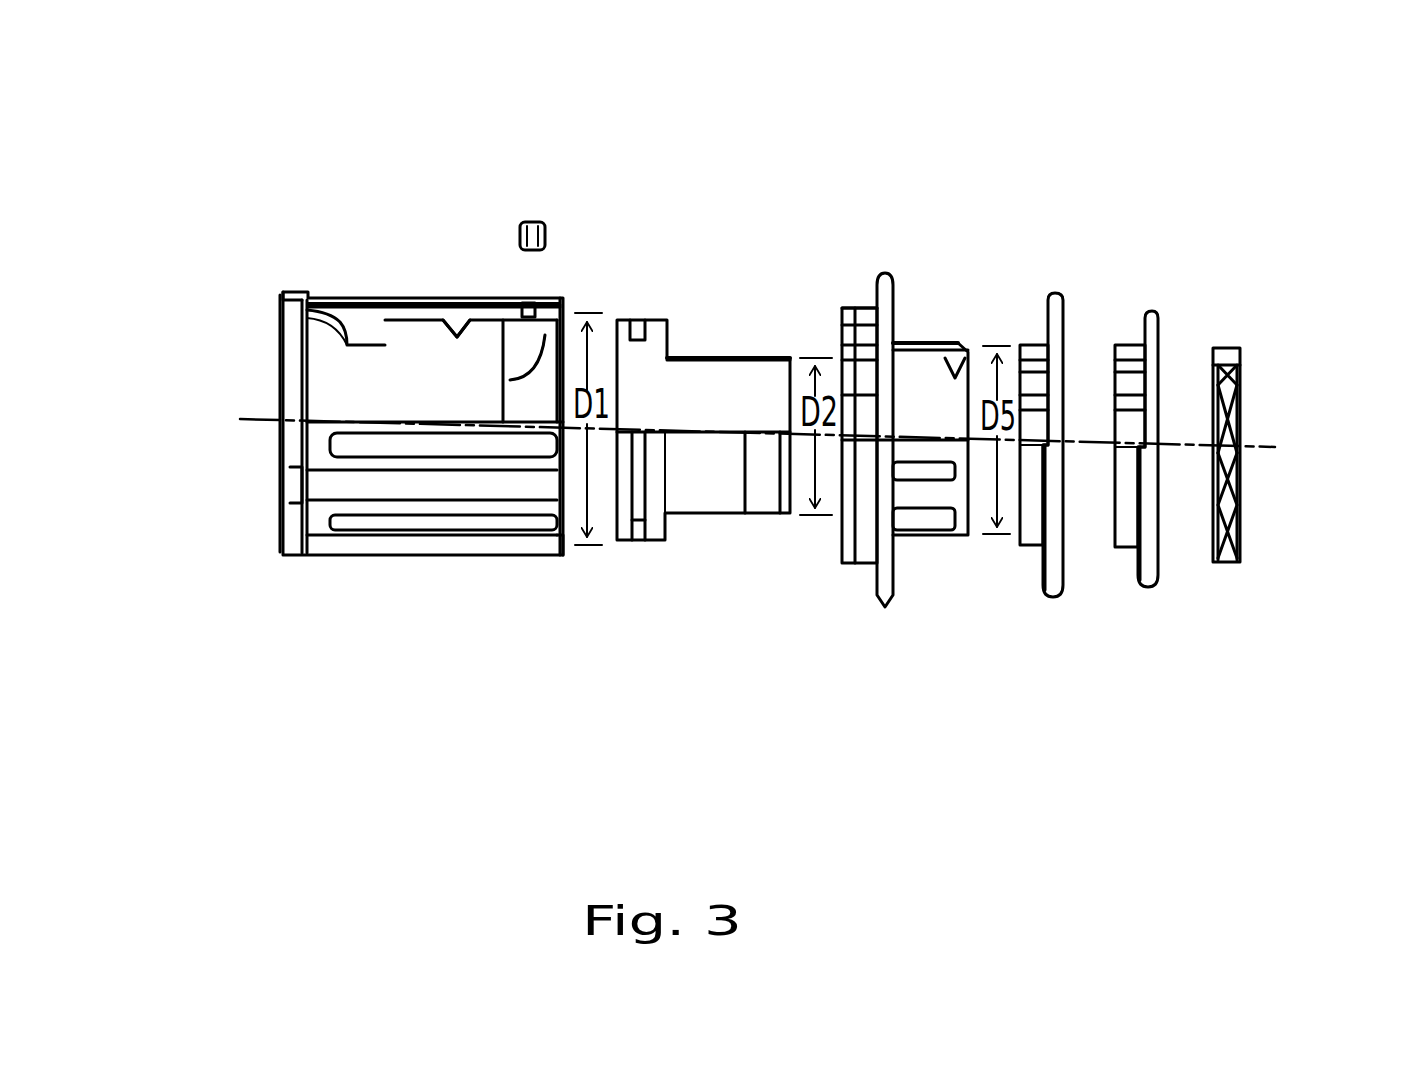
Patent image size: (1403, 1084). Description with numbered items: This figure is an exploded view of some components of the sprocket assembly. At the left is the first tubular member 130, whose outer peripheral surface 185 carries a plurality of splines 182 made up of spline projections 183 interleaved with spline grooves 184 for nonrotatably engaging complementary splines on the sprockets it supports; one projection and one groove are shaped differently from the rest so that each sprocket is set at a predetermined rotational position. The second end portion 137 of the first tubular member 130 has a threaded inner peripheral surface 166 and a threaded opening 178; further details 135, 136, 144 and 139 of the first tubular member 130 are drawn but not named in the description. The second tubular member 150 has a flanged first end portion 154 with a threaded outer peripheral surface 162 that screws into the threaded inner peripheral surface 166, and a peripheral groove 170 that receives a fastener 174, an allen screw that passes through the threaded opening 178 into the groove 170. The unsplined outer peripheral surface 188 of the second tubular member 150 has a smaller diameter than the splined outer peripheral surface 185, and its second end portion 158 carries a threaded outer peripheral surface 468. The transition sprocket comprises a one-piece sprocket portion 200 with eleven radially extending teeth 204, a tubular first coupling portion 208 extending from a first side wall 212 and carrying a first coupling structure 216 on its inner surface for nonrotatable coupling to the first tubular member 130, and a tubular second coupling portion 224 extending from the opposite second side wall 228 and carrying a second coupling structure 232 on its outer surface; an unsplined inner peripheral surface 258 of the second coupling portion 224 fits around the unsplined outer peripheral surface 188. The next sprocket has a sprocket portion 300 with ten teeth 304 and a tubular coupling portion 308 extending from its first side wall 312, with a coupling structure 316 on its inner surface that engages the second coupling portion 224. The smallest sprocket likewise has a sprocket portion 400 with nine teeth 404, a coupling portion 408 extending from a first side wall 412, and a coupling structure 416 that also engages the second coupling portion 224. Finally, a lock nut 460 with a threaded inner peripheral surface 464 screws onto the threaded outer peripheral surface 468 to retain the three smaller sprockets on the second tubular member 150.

The first tubular member 130 is at (320, 293).
The flange 135 is at (282, 288).
The lip 136 is at (283, 320).
The inner lip surface 144 is at (347, 348).
The outer peripheral surface 185 is at (405, 306).
The notch 139 is at (467, 320).
The threaded opening 178 is at (528, 311).
The fastener 174 is at (535, 221).
The threaded inner peripheral surface 166 is at (510, 380).
The splines 182 is at (328, 560).
The spline projections 183 is at (390, 527).
The spline grooves 184 is at (432, 520).
The second end portion 137 is at (533, 558).
The second tubular member 150 is at (687, 358).
The peripheral groove 170 is at (638, 322).
The outer peripheral surface 188 is at (740, 340).
The second end portion 158 is at (757, 520).
The threaded outer peripheral surface 162 is at (650, 542).
The first end portion 154 is at (622, 543).
The threaded outer peripheral surface 468 is at (778, 358).
The sprocket portion 200 is at (878, 620).
The first coupling portion 208 is at (850, 570).
The first side wall 212 is at (868, 297).
The first coupling structure 216 is at (830, 318).
The teeth 204 is at (893, 328).
The second side wall 228 is at (935, 282).
The inner peripheral surface 258 is at (967, 357).
The second coupling structure 232 is at (930, 545).
The second coupling portion 224 is at (963, 530).
The sprocket portion 300 is at (1062, 600).
The coupling structure 316 is at (1027, 338).
The first side wall 312 is at (1050, 312).
The teeth 304 is at (1063, 299).
The coupling portion 308 is at (1032, 548).
The sprocket portion 400 is at (1161, 583).
The coupling structure 416 is at (1123, 340).
The first side wall 412 is at (1148, 310).
The teeth 404 is at (1160, 312).
The coupling portion 408 is at (1120, 550).
The lock nut 460 is at (1227, 347).
The threaded inner peripheral surface 464 is at (1239, 378).